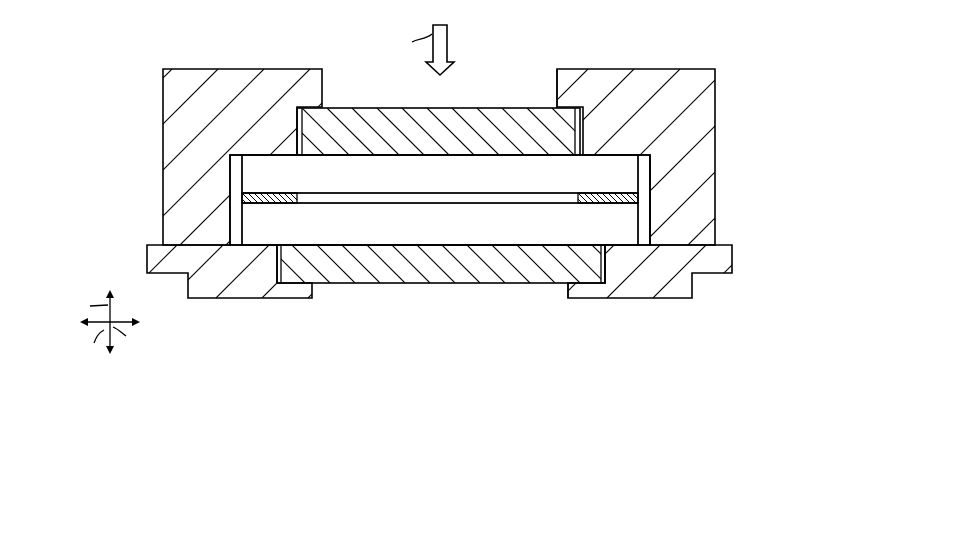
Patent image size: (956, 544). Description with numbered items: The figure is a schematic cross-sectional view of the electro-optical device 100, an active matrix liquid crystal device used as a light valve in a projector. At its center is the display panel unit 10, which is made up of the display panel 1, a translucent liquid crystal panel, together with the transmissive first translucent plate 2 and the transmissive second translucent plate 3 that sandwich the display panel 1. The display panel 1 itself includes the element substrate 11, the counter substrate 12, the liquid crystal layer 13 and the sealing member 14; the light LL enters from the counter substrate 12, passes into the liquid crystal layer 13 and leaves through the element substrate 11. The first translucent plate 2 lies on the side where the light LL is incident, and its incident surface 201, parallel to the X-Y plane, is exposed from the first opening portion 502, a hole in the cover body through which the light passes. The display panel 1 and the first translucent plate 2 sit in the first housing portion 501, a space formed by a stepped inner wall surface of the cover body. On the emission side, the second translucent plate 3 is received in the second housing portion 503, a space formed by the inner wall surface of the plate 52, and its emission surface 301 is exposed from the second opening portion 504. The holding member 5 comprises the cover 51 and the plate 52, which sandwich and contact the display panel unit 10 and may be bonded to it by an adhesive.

The electro-optical device 100 is at (709, 54).
The display panel 1 is at (440, 268).
The display panel unit 10 is at (500, 100).
The element substrate 11 is at (553, 349).
The counter substrate 12 is at (513, 178).
The liquid crystal layer 13 is at (443, 201).
The sealing member 14 is at (593, 201).
The first translucent plate 2 is at (367, 128).
The incident surface 201 is at (330, 107).
The second translucent plate 3 is at (353, 261).
The emission surface 301 is at (320, 285).
The holding member 5 is at (788, 182).
The cover 51 is at (692, 170).
The plate 52 is at (702, 258).
The first housing portion 501 is at (648, 162).
The first opening portion 502 is at (556, 70).
The second housing portion 503 is at (606, 249).
The second opening portion 504 is at (569, 300).